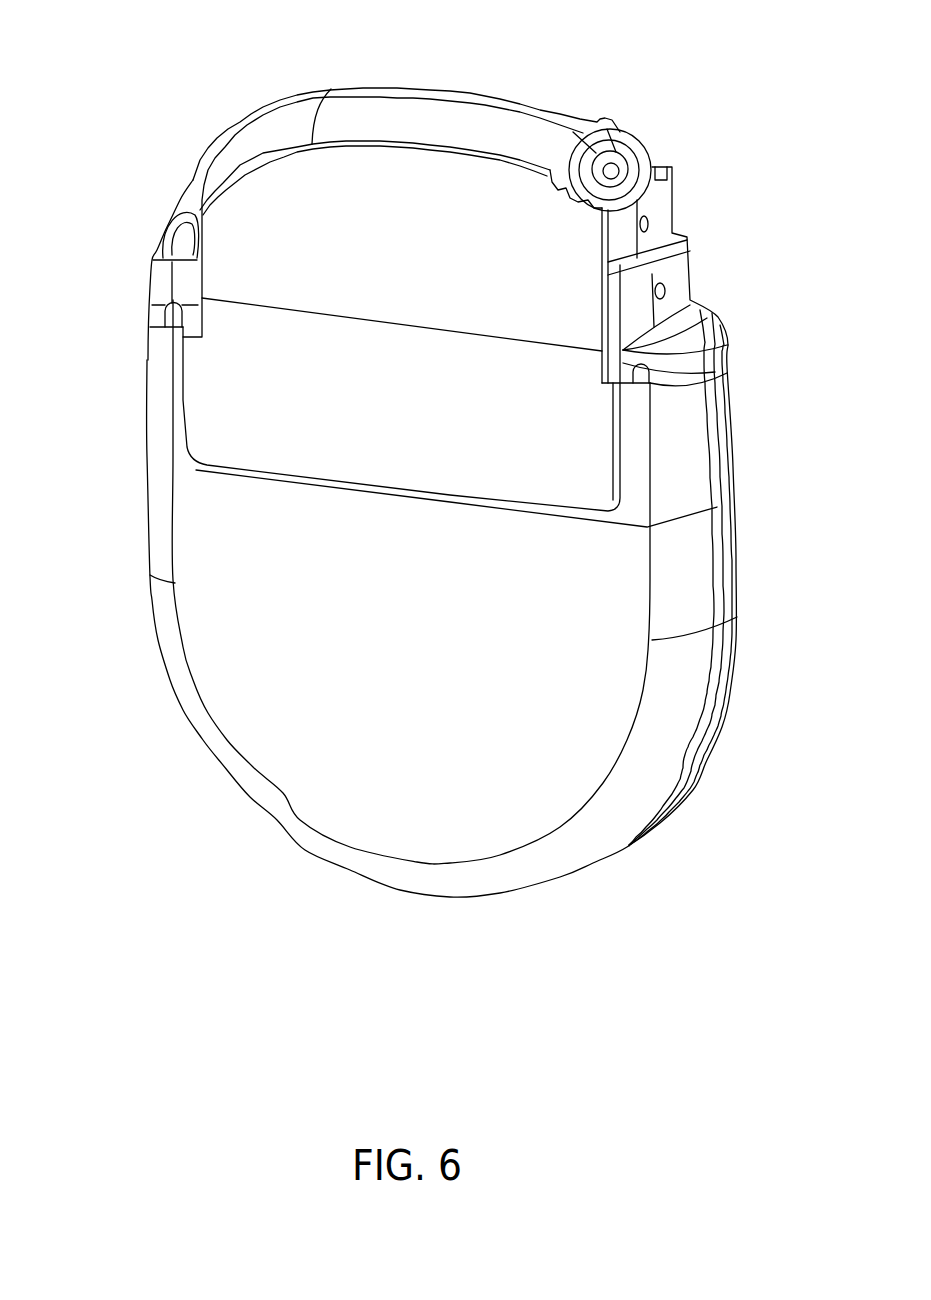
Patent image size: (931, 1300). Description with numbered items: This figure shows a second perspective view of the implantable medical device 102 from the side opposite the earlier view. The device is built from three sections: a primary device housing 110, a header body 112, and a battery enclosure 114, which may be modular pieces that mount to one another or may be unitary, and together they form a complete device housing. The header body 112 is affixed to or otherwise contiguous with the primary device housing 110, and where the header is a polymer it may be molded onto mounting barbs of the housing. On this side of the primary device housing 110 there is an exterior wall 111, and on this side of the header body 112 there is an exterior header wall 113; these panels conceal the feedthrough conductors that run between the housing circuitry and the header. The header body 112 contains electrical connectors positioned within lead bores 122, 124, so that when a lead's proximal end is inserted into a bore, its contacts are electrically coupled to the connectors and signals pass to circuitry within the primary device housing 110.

The implantable medical device 102 is at (690, 843).
The primary device housing 110 is at (707, 437).
The exterior wall 111 is at (228, 425).
The header body 112 is at (400, 87).
The exterior header wall 113 is at (268, 271).
The battery enclosure 114 is at (310, 692).
The lead bore 122 is at (668, 289).
The lead bore 124 is at (648, 218).